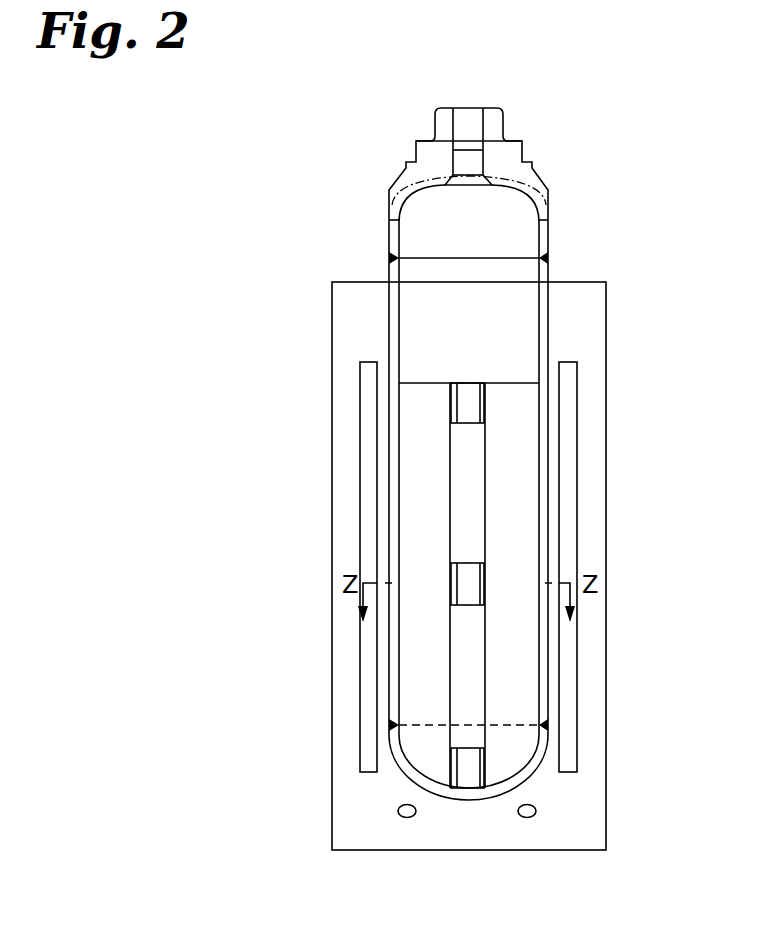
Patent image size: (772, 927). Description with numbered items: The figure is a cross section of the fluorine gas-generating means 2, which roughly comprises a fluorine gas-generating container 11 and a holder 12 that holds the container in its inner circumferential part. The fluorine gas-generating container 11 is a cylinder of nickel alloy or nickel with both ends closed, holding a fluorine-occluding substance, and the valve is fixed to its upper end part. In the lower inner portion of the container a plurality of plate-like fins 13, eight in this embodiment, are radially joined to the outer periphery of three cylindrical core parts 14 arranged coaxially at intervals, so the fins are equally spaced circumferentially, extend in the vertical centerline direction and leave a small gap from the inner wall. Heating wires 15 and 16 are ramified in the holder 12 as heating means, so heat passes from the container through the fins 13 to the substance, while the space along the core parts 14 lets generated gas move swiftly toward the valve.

The fluorine gas-generating means 2 is at (344, 224).
The fluorine gas-generating container 11 is at (508, 290).
The holder 12 is at (621, 337).
The plate-like fins 13 is at (427, 390).
The cylindrical core parts 14 is at (473, 403).
The heating wire 15 is at (365, 475).
The heating wire 16 is at (410, 818).